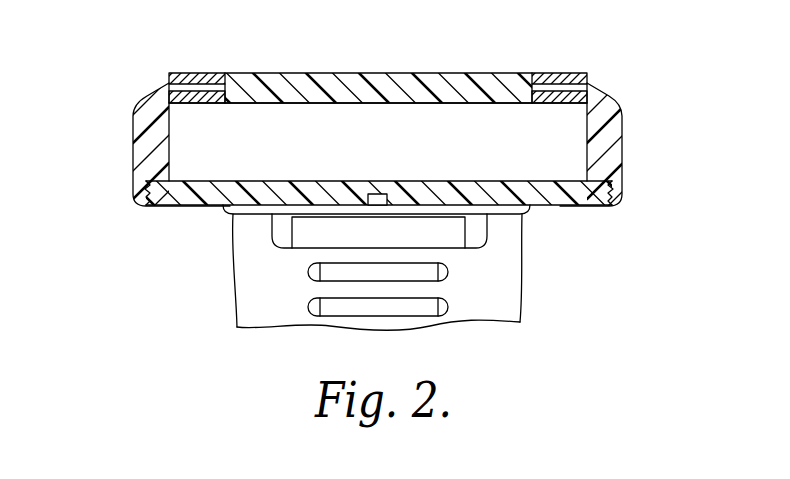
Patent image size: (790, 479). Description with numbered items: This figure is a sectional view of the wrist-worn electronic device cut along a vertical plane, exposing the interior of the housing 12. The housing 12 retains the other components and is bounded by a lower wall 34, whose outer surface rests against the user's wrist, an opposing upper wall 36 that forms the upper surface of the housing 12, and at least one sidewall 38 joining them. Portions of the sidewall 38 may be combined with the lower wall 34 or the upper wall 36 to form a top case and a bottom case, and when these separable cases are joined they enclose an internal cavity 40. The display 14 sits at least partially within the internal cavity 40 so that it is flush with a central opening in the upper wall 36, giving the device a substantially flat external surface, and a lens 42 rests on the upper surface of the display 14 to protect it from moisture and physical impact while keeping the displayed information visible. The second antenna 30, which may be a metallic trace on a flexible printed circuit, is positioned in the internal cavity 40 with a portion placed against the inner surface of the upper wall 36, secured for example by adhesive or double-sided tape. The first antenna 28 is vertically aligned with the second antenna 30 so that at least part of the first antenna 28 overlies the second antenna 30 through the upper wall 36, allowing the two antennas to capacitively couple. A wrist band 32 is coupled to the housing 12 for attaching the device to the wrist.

The housing 12 is at (147, 223).
The display 14 is at (420, 98).
The first antenna 28 is at (187, 75).
The second antenna 30 is at (192, 99).
The wrist band 32 is at (510, 295).
The lower wall 34 is at (567, 203).
The upper wall 36 is at (212, 90).
The sidewall 38 is at (140, 153).
The internal cavity 40 is at (210, 160).
The lens 42 is at (365, 73).